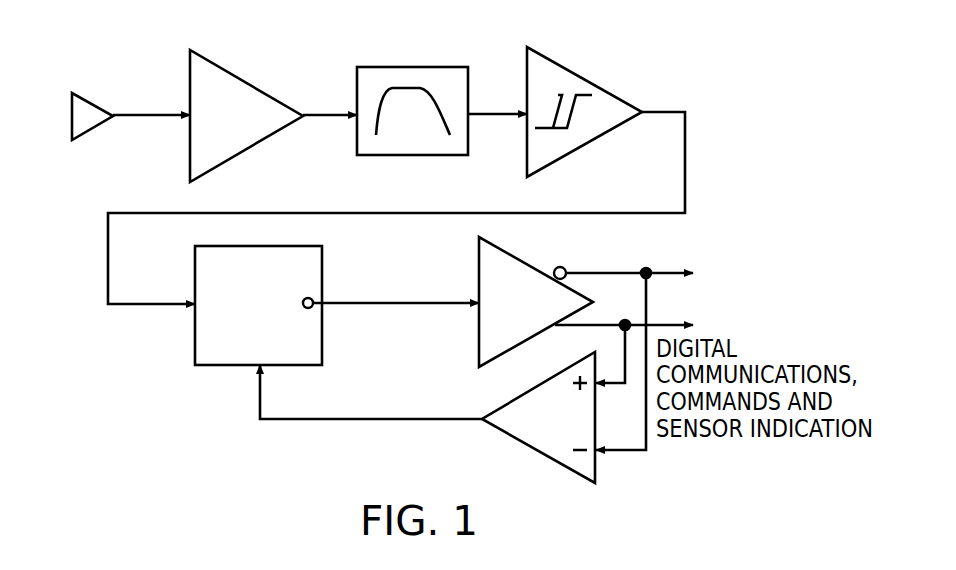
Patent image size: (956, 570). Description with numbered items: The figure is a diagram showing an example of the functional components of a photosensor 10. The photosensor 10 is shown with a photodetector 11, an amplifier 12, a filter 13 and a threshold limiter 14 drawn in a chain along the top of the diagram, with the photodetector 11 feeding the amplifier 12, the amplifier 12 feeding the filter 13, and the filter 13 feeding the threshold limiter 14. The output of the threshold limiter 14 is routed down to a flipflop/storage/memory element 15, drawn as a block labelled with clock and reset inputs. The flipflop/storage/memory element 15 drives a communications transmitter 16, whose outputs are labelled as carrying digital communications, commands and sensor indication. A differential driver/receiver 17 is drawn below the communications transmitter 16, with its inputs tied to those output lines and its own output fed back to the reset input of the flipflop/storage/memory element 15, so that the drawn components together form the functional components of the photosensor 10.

The photosensor 10 is at (103, 410).
The photodetector 11 is at (82, 110).
The amplifier 12 is at (215, 76).
The filter 13 is at (420, 73).
The threshold limiter 14 is at (550, 71).
The flipflop/storage/memory element 15 is at (302, 265).
The communications transmitter 16 is at (517, 265).
The differential driver/receiver 17 is at (547, 427).